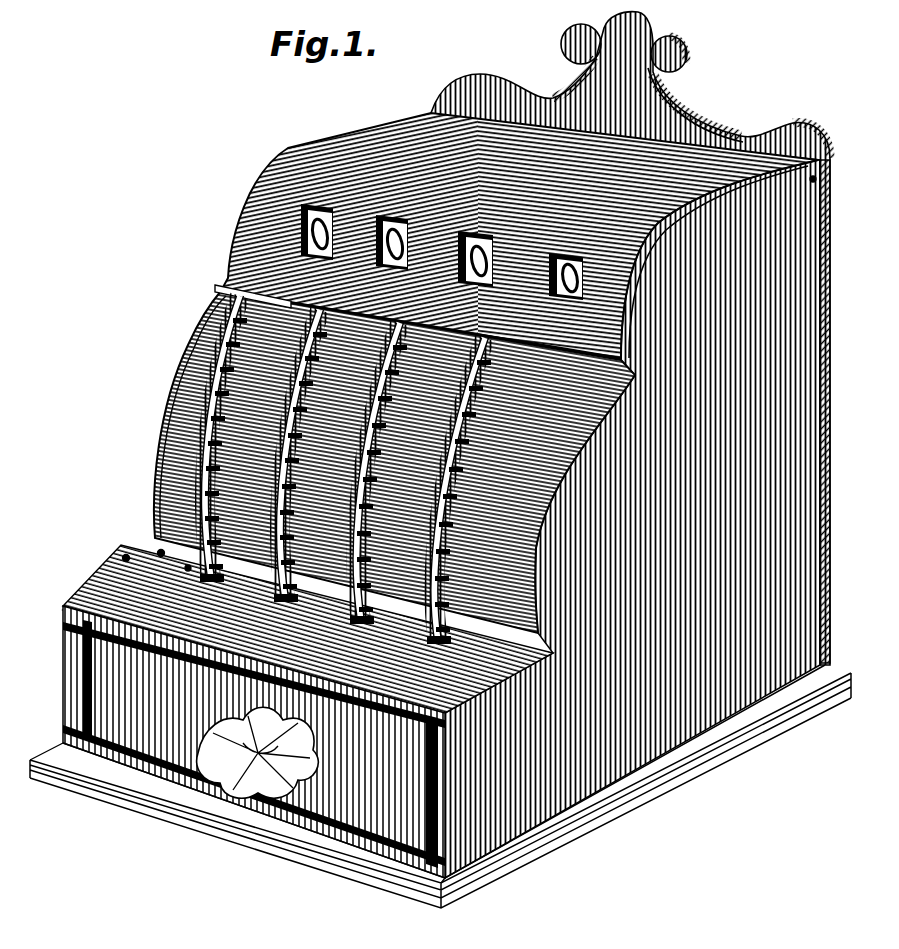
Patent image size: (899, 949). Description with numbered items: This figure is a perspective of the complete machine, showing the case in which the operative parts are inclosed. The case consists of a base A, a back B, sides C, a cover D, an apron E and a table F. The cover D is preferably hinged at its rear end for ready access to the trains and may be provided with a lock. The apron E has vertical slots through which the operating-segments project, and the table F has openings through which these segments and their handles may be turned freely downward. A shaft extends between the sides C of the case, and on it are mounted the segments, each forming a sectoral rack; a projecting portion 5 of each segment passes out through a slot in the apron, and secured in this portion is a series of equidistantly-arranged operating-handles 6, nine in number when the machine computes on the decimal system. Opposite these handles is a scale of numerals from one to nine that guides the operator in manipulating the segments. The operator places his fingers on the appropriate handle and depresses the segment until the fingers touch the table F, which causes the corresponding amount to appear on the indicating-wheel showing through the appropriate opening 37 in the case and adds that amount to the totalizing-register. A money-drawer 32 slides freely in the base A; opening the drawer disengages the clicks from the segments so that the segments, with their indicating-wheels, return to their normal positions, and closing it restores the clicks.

The base A is at (174, 816).
The back B is at (446, 70).
The sides C is at (735, 680).
The cover D is at (322, 138).
The apron E is at (381, 462).
The table F is at (116, 556).
The projecting portion of segment 5 is at (228, 304).
The operating-handles 6 is at (162, 398).
The money-drawer 32 is at (70, 670).
The opening 37 is at (300, 190).